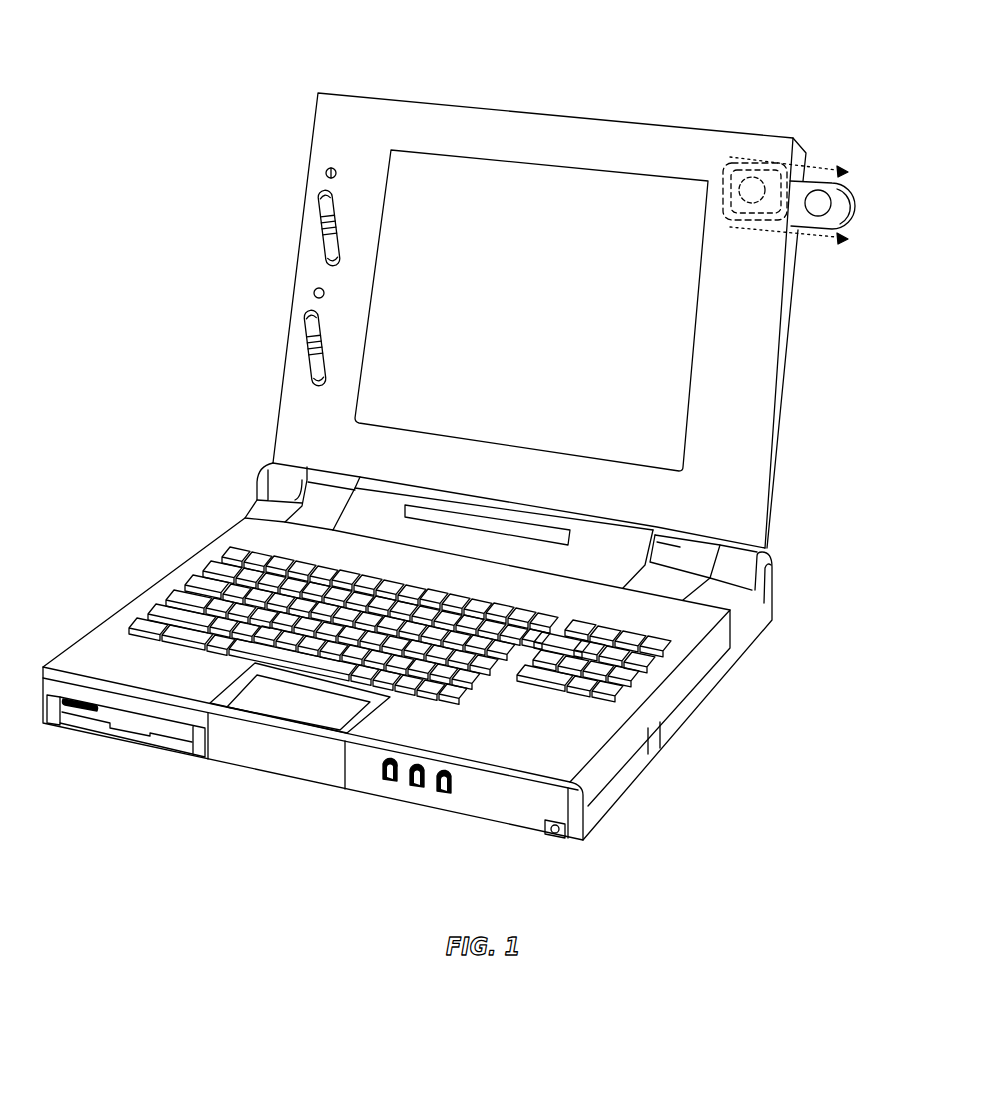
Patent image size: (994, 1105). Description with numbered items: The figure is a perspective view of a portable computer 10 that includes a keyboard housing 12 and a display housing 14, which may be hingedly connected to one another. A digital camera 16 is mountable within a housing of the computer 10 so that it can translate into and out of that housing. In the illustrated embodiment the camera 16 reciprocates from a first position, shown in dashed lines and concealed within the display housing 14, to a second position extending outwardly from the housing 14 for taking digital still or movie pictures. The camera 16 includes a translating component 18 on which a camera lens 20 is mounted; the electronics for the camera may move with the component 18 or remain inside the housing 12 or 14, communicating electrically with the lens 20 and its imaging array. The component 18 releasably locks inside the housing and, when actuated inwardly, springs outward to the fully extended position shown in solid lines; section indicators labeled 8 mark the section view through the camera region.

The portable computer 10 is at (515, 55).
The keyboard housing 12 is at (650, 690).
The display housing 14 is at (757, 383).
The digital camera 16 is at (819, 95).
The translating component 18 is at (838, 190).
The camera lens 20 is at (823, 203).
The section view indicator 8 is at (697, 180).